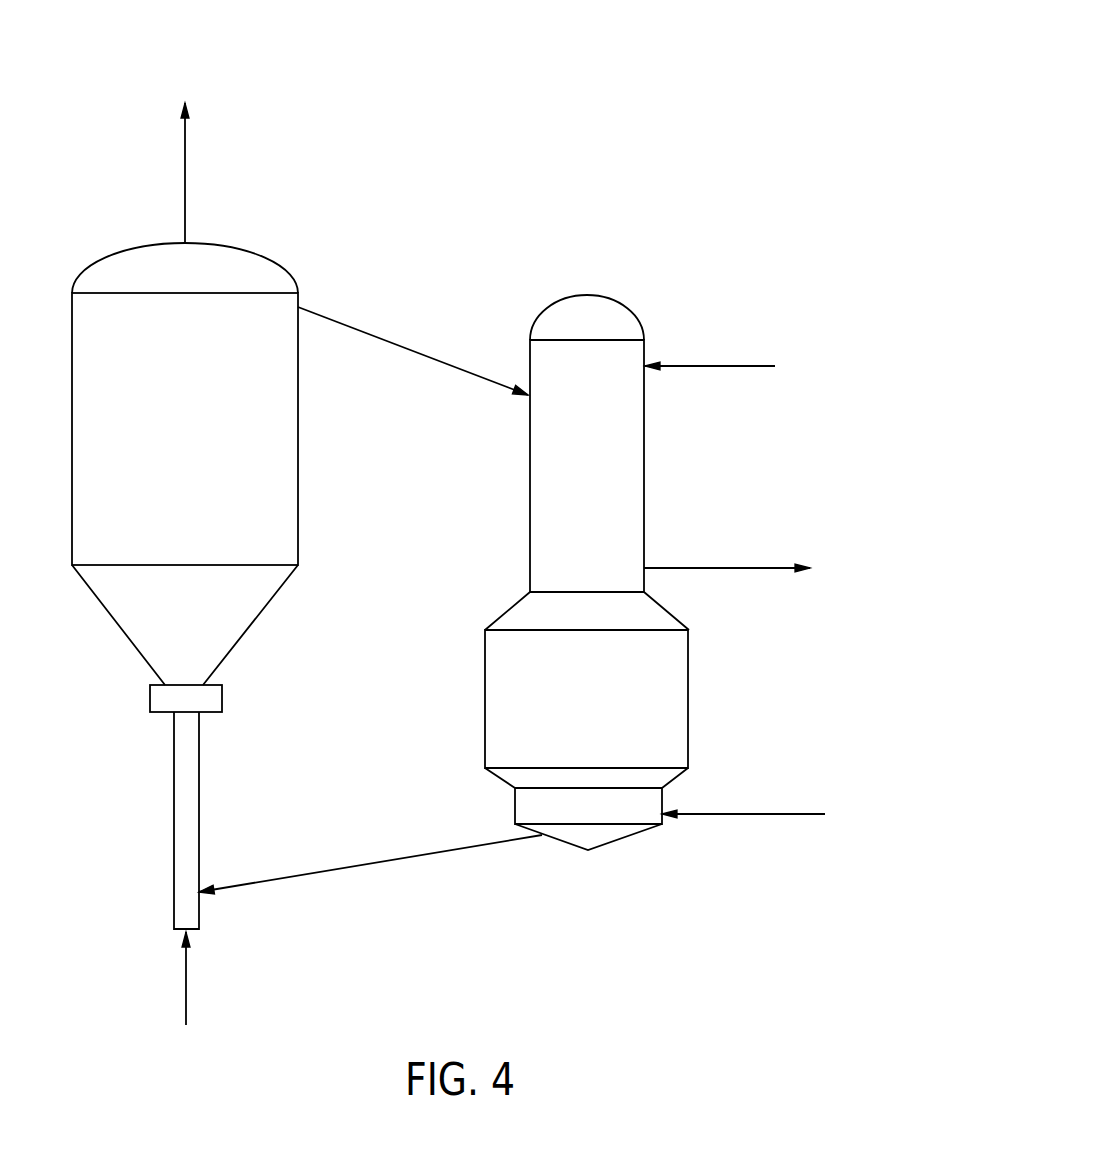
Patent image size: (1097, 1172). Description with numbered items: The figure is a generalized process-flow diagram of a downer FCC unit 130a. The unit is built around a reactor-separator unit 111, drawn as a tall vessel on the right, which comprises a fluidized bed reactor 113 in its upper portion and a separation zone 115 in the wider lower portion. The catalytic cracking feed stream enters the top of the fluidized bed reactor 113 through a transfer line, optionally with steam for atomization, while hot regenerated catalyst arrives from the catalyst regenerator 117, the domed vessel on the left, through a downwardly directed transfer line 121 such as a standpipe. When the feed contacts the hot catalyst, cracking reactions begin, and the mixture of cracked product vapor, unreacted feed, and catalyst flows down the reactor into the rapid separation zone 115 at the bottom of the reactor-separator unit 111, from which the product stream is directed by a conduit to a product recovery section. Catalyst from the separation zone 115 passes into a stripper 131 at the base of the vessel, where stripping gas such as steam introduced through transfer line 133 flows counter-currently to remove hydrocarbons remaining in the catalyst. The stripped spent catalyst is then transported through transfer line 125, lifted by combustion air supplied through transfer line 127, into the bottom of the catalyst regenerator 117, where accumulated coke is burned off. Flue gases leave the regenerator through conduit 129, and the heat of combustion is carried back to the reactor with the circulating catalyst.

The downer FCC unit 130a is at (650, 93).
The conduit 129 is at (187, 188).
The catalyst regenerator 117 is at (283, 452).
The transfer line 127 is at (188, 980).
The transfer line 121 is at (418, 352).
The transfer line 125 is at (322, 872).
The reactor-separator unit 111 is at (586, 520).
The fluidized bed reactor 113 is at (548, 492).
The separation zone 115 is at (503, 710).
The stripper 131 is at (527, 812).
The transfer line 133 is at (757, 812).